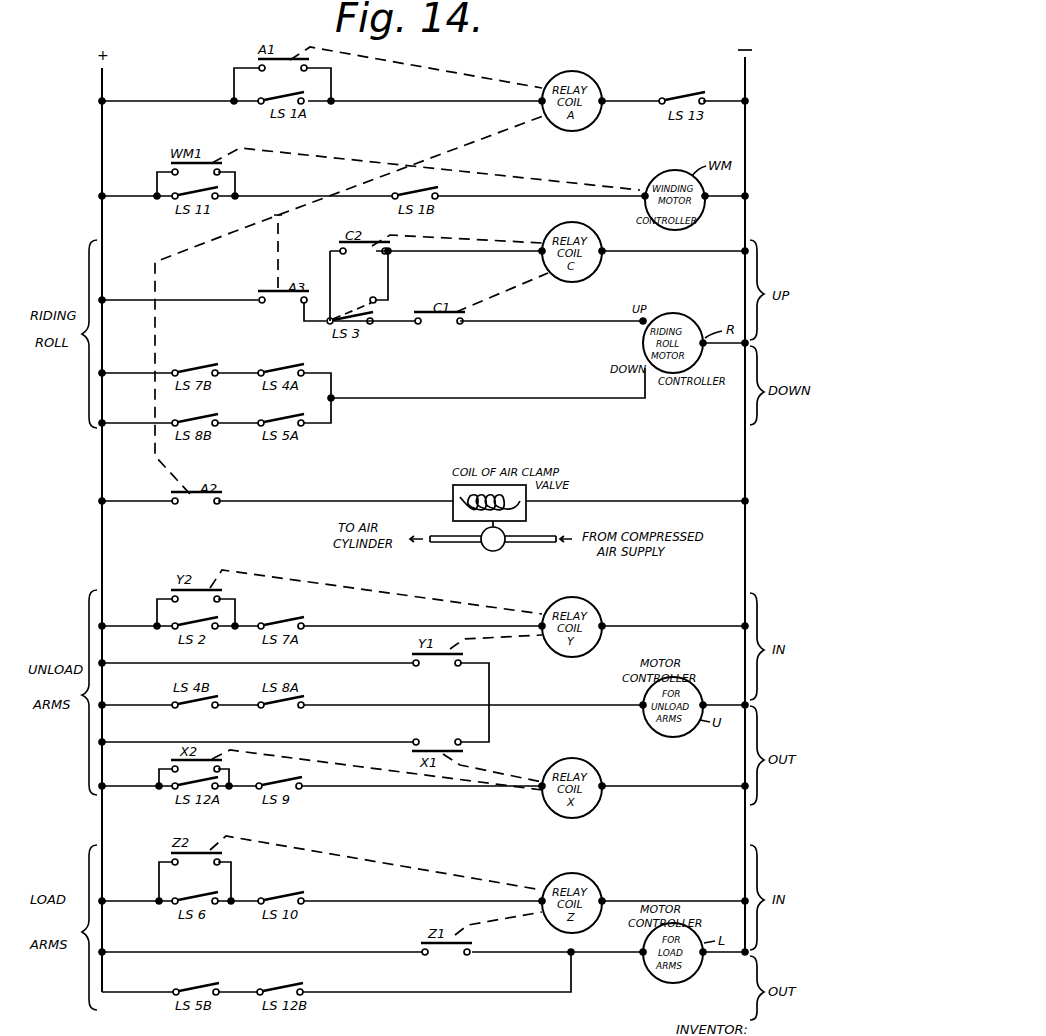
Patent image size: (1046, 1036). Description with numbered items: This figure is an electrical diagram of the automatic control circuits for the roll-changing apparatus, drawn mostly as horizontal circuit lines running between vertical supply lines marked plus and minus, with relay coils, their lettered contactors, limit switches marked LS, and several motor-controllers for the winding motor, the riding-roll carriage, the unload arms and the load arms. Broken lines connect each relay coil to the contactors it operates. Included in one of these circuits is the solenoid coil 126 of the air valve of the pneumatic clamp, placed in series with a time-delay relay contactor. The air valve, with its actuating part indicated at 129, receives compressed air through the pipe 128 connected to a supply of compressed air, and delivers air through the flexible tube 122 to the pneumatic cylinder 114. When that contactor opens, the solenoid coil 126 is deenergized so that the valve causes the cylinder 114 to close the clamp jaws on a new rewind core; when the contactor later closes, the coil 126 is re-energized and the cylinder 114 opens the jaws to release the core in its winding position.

The pneumatic cylinder 114 is at (390, 550).
The flexible tube 122 is at (469, 546).
The solenoid coil 126 is at (458, 496).
The pipe 128 is at (533, 535).
The air clamp valve 129 is at (501, 547).